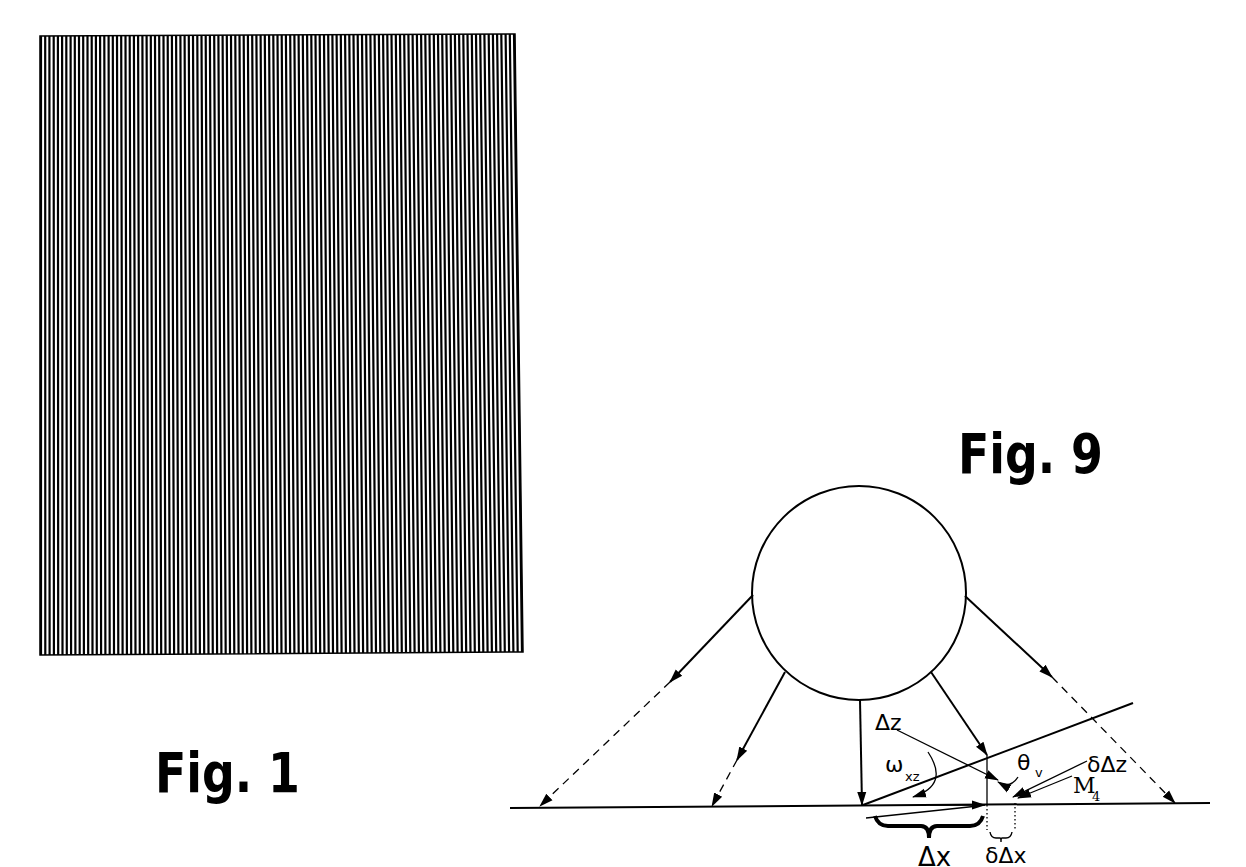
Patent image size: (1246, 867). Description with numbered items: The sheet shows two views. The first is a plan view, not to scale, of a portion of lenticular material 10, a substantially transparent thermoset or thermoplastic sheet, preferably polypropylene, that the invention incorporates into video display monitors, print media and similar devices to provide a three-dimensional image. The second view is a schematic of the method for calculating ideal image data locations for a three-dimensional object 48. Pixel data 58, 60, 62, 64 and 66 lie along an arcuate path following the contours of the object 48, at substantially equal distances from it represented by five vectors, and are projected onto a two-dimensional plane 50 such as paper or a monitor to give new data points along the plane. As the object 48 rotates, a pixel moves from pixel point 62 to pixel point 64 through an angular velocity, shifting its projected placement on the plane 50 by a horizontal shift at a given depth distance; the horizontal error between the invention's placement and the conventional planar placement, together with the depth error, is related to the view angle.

In FIG. 1, the lenticular material 10 is at (514, 181).
In FIG. 9, the object 48 is at (757, 558).
In FIG. 9, the two-dimensional plane 50 is at (1070, 805).
In FIG. 9, the pixel data 58 is at (665, 680).
In FIG. 9, the pixel data 60 is at (733, 760).
In FIG. 9, the pixel point 62 is at (856, 801).
In FIG. 9, the pixel point 64 is at (990, 752).
In FIG. 9, the pixel data 66 is at (1057, 676).